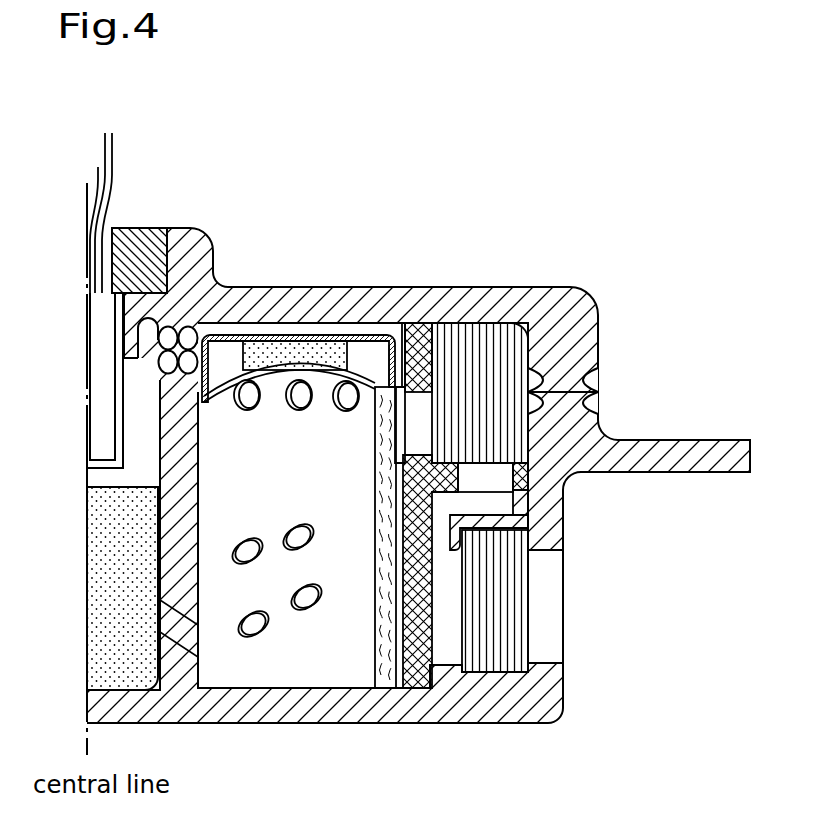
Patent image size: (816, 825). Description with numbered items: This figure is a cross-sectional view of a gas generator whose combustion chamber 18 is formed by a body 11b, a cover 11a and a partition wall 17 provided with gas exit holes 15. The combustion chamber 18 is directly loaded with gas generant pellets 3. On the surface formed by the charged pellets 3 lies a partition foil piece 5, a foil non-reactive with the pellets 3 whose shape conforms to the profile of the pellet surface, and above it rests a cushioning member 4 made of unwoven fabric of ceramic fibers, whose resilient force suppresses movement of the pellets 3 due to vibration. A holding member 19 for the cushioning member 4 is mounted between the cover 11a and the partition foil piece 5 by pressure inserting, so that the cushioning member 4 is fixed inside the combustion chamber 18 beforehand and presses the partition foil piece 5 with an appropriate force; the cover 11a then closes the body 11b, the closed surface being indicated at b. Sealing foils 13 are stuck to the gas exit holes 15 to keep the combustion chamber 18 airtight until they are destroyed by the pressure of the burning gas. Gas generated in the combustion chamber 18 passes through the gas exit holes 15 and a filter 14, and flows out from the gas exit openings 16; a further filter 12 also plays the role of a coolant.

The gas generant pellets 3 is at (248, 383).
The cushioning member 4 is at (262, 341).
The partition foil piece 5 is at (371, 362).
The cover 11a is at (585, 310).
The body 11b is at (566, 511).
The filter 12 is at (387, 685).
The sealing foil 13 is at (392, 357).
The filter 14 is at (500, 338).
The gas exit holes 15 is at (433, 412).
The gas exit openings 16 is at (545, 552).
The partition wall 17 is at (415, 680).
The combustion chamber 18 is at (300, 486).
The holding member 19 is at (355, 337).
The closed surface b is at (598, 418).